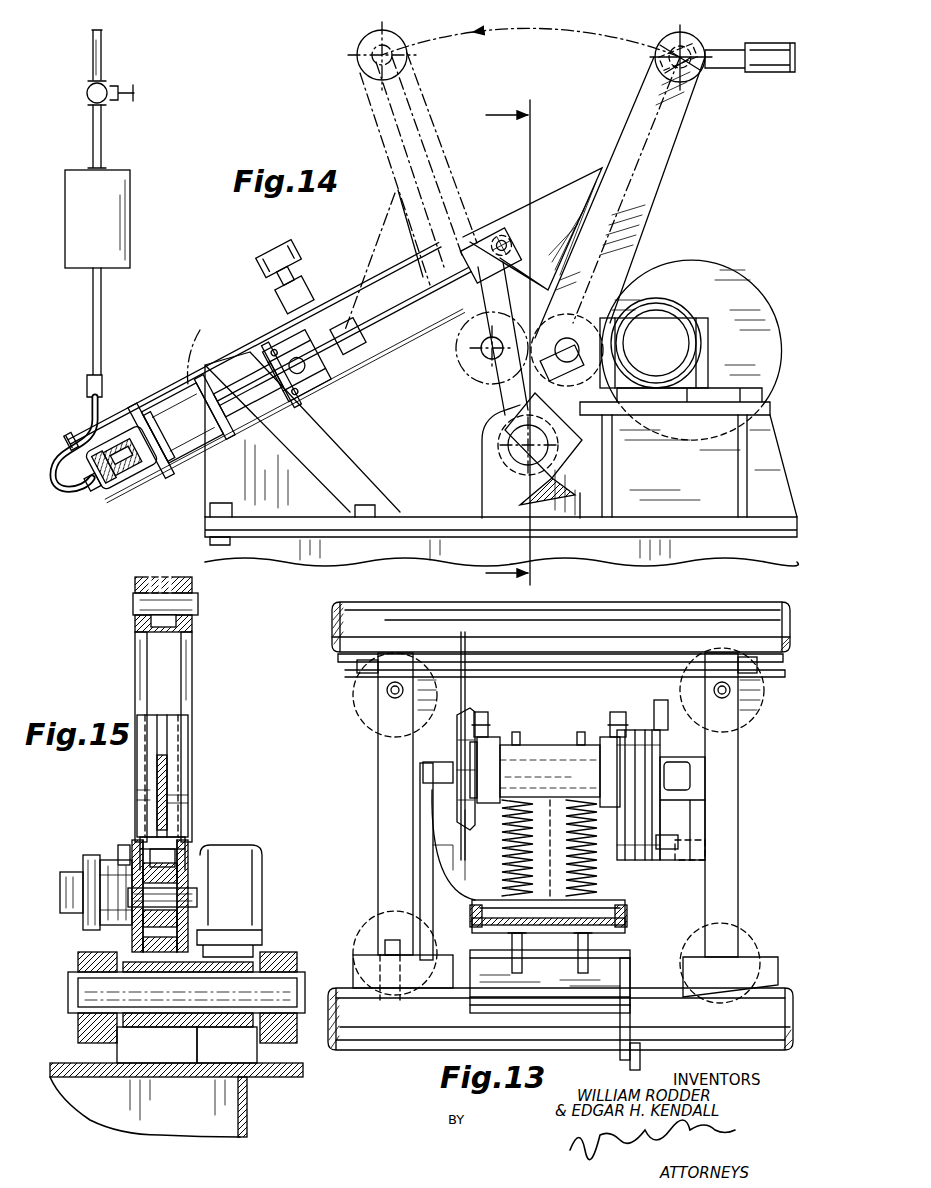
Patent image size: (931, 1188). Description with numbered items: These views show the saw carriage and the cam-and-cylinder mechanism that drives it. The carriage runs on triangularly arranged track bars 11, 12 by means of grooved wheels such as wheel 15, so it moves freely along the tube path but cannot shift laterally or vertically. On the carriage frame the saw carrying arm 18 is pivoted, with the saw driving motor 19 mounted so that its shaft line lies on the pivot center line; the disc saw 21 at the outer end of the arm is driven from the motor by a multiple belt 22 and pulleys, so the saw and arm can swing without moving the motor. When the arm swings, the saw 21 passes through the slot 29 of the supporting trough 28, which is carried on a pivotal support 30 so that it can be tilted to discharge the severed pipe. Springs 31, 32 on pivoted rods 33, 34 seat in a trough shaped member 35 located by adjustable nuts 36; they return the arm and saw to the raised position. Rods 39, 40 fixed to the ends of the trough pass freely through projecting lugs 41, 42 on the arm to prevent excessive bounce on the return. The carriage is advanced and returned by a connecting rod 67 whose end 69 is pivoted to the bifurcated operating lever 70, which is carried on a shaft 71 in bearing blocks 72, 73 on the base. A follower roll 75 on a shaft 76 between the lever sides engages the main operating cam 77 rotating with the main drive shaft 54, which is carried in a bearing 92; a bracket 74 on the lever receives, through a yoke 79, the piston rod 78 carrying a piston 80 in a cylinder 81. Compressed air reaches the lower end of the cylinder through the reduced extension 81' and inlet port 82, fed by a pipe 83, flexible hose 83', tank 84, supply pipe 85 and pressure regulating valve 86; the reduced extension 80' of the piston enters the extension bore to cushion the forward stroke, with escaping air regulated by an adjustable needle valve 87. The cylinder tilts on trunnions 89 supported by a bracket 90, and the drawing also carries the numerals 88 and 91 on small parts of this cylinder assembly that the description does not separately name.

In FIG. 13, the track bar 11 is at (690, 605).
In FIG. 13, the track bar 12 is at (375, 1035).
In FIG. 14, the grooved wheel 15 is at (508, 345).
In FIG. 13, the grooved wheel 15 is at (355, 672).
In FIG. 13, the saw carrying arm 18 is at (685, 797).
In FIG. 13, the saw driving motor 19 is at (420, 872).
In FIG. 13, the disc saw 21 is at (468, 690).
In FIG. 13, the multiple belt 22 is at (655, 740).
In FIG. 13, the supporting trough 28 is at (365, 956).
In FIG. 13, the slot 29 is at (470, 985).
In FIG. 13, the pivotal support 30 is at (528, 1015).
In FIG. 13, the spring 31 is at (528, 830).
In FIG. 13, the spring 32 is at (570, 872).
In FIG. 13, the pivoted rod 33 is at (522, 736).
In FIG. 13, the pivoted rod 34 is at (575, 728).
In FIG. 13, the trough shaped member 35 is at (524, 940).
In FIG. 13, the adjustable nuts 36 is at (480, 925).
In FIG. 13, the rod 39 is at (485, 712).
In FIG. 13, the rod 40 is at (622, 712).
In FIG. 13, the projecting lug 41 is at (500, 735).
In FIG. 13, the projecting lug 42 is at (615, 718).
In FIG. 14, the main drive shaft 54 is at (665, 340).
In FIG. 15, the main drive shaft 54 is at (75, 875).
In FIG. 14, the connecting rod 67 is at (775, 70).
In FIG. 15, the connecting rod 67 is at (150, 650).
In FIG. 14, the pivotal connection 69 is at (690, 35).
In FIG. 15, the pivotal connection 69 is at (175, 583).
In FIG. 14, the operating lever 70 is at (372, 95).
In FIG. 15, the operating lever 70 is at (137, 636).
In FIG. 14, the shaft 71 is at (500, 438).
In FIG. 15, the shaft 71 is at (278, 985).
In FIG. 14, the bearing block 72 is at (500, 492).
In FIG. 15, the bearing block 72 is at (280, 1060).
In FIG. 15, the bearing block 73 is at (80, 1030).
In FIG. 14, the bracket 74 is at (560, 195).
In FIG. 15, the bracket 74 is at (168, 768).
In FIG. 14, the follower roll 75 is at (478, 395).
In FIG. 15, the follower roll 75 is at (178, 852).
In FIG. 15, the shaft 76 is at (118, 845).
In FIG. 14, the main operating cam 77 is at (690, 270).
In FIG. 15, the main operating cam 77 is at (132, 930).
In FIG. 14, the piston rod 78 is at (410, 322).
In FIG. 14, the yoke 79 is at (345, 315).
In FIG. 14, the piston 80 is at (268, 354).
In FIG. 14, the reduced extension of piston 80' is at (264, 389).
In FIG. 14, the cylinder 81 is at (183, 393).
In FIG. 14, the reduced extension of cylinder 81' is at (139, 438).
In FIG. 14, the inlet port 82 is at (118, 490).
In FIG. 14, the pipe 83 is at (122, 332).
In FIG. 14, the flexible hose 83' is at (62, 461).
In FIG. 14, the tank 84 is at (112, 196).
In FIG. 14, the supply pipe 85 is at (104, 45).
In FIG. 14, the pressure regulating valve 86 is at (115, 82).
In FIG. 14, the adjustable needle valve 87 is at (165, 483).
In FIG. 14, the valve 88 is at (285, 275).
In FIG. 14, the trunnions 89 is at (310, 375).
In FIG. 14, the bracket 90 is at (300, 445).
In FIG. 14, the piston 91 is at (120, 473).
In FIG. 14, the bearing 92 is at (695, 365).
In FIG. 15, the bearing 92 is at (230, 890).